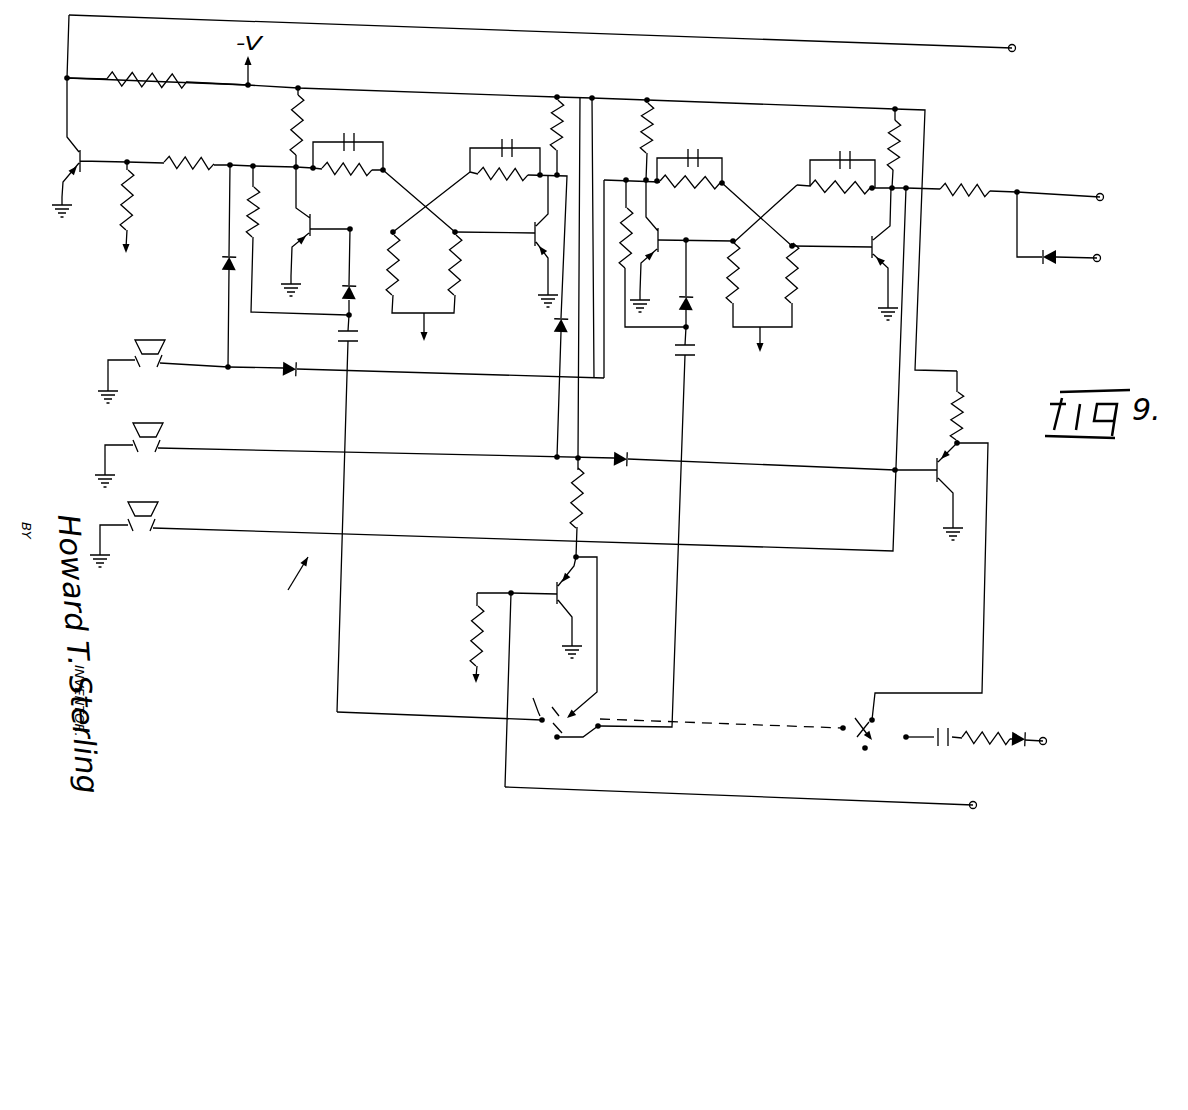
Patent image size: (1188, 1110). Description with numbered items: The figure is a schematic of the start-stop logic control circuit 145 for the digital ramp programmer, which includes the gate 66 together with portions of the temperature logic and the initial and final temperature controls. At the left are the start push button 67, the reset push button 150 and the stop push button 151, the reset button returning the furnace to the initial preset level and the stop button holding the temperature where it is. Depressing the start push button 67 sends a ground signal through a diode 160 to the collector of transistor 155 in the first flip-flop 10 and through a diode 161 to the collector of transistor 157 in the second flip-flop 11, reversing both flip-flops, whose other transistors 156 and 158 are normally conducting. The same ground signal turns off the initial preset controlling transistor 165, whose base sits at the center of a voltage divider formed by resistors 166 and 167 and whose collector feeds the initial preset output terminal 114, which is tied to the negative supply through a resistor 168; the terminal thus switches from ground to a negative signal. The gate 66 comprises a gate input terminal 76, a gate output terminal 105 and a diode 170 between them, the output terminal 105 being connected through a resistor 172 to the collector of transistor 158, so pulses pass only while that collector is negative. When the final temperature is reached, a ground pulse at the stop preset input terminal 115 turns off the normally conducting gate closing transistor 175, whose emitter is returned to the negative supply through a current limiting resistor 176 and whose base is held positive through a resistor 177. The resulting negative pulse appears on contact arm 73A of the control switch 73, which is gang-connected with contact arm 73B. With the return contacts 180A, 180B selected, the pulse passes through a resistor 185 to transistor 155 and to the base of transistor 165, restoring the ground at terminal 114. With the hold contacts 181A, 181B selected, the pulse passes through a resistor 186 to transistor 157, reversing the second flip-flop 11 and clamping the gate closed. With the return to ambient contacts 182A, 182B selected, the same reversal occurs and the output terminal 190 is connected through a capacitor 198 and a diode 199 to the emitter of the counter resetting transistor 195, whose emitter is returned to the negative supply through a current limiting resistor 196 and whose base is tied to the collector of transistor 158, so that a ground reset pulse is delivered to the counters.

The initial preset output terminal 114 is at (625, 46).
The initial preset controlling transistor 165 is at (75, 158).
The resistor 168 is at (140, 77).
The resistor 166 is at (185, 158).
The resistor 167 is at (134, 220).
The resistor 185 is at (258, 214).
The diode 160 is at (221, 262).
The diode 161 is at (290, 372).
The start push button 67 is at (163, 359).
The reset push button 150 is at (495, 442).
The stop push button 151 is at (498, 377).
The control circuit 145 is at (286, 594).
The flip-flop FF10 10 is at (424, 400).
The transistor 155 is at (312, 212).
The transistor 156 is at (535, 240).
The flip-flop FF11 11 is at (752, 413).
The resistor 186 is at (622, 212).
The transistor 157 is at (653, 256).
The transistor 158 is at (870, 251).
The resistor 172 is at (958, 185).
The gate output terminal 105 is at (1100, 193).
The gate 66 is at (1064, 234).
The diode 170 is at (1048, 265).
The gate input terminal 76 is at (1096, 263).
The current limiting resistor 196 is at (963, 420).
The counter resetting transistor 195 is at (934, 480).
The current limiting resistor 176 is at (583, 515).
The gate closing transistor 175 is at (556, 604).
The resistor 177 is at (468, 639).
The contact arm 73A is at (566, 714).
The return contact 180A is at (538, 720).
The hold contact 181A is at (533, 739).
The return to ambient contact 182A is at (595, 729).
The control switch 73 is at (700, 722).
The contact arm 73B is at (865, 720).
The return contact 180B is at (842, 732).
The hold contact 181B is at (863, 751).
The return to ambient contact 182B is at (906, 737).
The capacitor 198 is at (942, 730).
The diode 199 is at (1035, 706).
The output terminal 190 is at (1045, 736).
The stop preset input terminal 115 is at (812, 809).